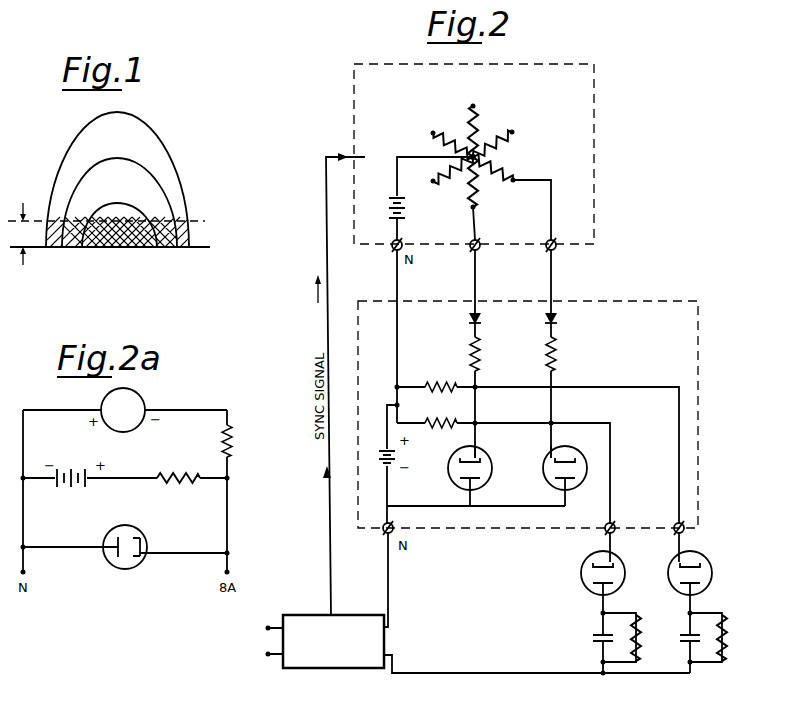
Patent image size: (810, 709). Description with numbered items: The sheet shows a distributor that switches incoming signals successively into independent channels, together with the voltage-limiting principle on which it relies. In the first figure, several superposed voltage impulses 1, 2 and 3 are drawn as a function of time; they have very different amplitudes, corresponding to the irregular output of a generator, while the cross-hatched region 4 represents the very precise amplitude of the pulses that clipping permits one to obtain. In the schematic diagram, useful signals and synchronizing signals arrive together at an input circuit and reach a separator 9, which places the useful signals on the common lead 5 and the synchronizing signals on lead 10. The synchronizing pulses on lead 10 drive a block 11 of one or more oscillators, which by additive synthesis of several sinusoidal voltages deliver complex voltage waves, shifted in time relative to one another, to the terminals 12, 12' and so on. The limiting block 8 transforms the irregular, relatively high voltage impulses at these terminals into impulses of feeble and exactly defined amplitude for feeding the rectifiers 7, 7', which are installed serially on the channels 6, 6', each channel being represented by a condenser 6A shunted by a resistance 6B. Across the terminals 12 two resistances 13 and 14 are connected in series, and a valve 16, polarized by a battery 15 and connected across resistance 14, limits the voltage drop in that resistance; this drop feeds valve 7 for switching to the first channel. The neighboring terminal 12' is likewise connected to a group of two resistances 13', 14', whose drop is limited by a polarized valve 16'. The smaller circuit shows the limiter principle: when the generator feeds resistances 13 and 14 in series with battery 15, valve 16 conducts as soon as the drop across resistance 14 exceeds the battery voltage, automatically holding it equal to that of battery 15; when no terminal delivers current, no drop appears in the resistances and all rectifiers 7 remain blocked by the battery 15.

In FIG. 1, the voltage impulse 1 is at (158, 128).
In FIG. 1, the voltage impulse 2 is at (152, 173).
In FIG. 1, the voltage impulse 3 is at (147, 210).
In FIG. 1, the clipped pulse amplitude 4 is at (21, 234).
In FIG. 2, the common lead 5 is at (402, 641).
In FIG. 2, the independent channel 6 is at (599, 643).
In FIG. 2, the independent channel 6' is at (687, 642).
In FIG. 2, the condenser 6A is at (594, 641).
In FIG. 2, the resistance 6B is at (628, 658).
In FIG. 2, the rectifier 7 is at (589, 566).
In FIG. 2, the rectifier 7' is at (674, 563).
In FIG. 2, the limiting block 8 is at (650, 300).
In FIG. 2, the separator 9 is at (350, 614).
In FIG. 2, the synchronizing lead 10 is at (334, 575).
In FIG. 2A, the oscillator block 11 is at (143, 398).
In FIG. 2, the oscillator block 11 is at (596, 83).
In FIG. 2, the terminal 12 is at (484, 252).
In FIG. 2, the terminal 12' is at (561, 252).
In FIG. 2A, the resistance 13 is at (244, 441).
In FIG. 2, the resistance 13 is at (492, 342).
In FIG. 2, the resistance 13' is at (571, 342).
In FIG. 2A, the resistance 14 is at (184, 492).
In FIG. 2, the resistance 14 is at (445, 375).
In FIG. 2, the resistance 14' is at (436, 436).
In FIG. 2A, the battery 15 is at (80, 488).
In FIG. 2, the battery 15 is at (378, 470).
In FIG. 2A, the valve 16 is at (135, 558).
In FIG. 2, the valve 16 is at (492, 468).
In FIG. 2, the valve 16' is at (574, 477).